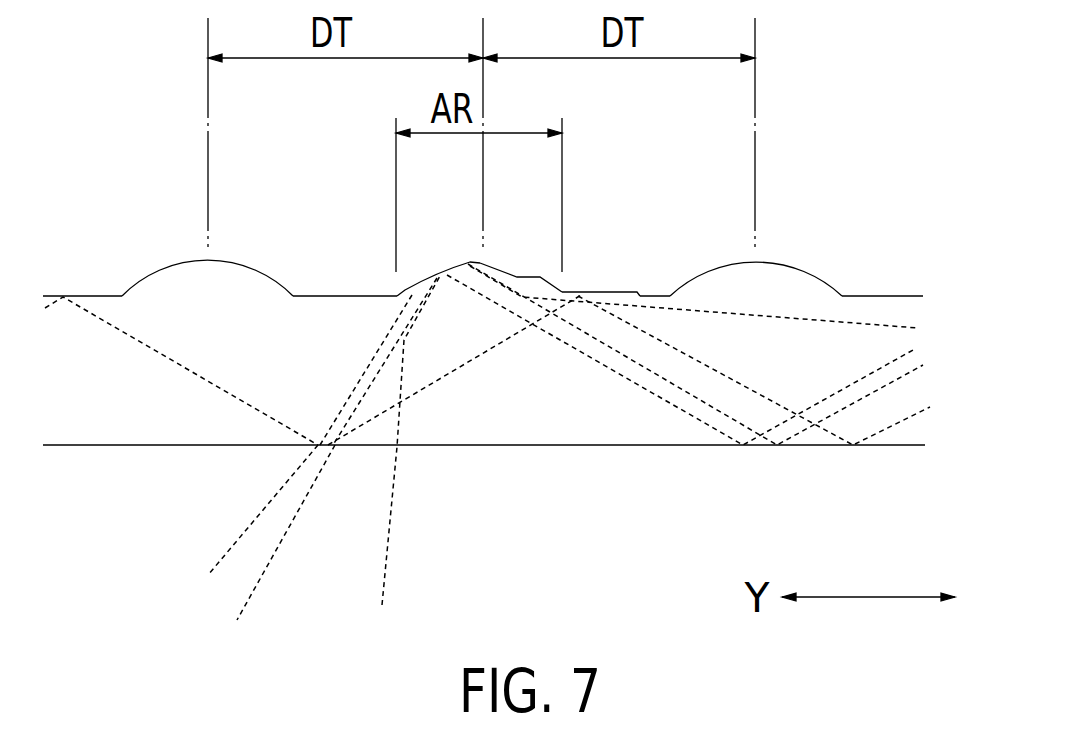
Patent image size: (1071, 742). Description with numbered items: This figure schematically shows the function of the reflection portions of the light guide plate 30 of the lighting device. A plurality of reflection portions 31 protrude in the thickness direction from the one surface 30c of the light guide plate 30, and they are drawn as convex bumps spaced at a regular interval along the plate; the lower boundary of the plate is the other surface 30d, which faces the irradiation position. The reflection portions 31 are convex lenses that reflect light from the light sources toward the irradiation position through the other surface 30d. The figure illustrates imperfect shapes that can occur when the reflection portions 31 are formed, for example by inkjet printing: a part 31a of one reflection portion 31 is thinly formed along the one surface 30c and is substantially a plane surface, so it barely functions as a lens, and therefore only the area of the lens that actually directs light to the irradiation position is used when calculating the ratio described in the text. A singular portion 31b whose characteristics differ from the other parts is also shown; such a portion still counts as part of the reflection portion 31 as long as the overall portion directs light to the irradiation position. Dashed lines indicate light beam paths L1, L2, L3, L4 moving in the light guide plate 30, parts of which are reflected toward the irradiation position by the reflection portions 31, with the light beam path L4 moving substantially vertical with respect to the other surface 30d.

The light guide plate 30 is at (500, 333).
The one surface of the light guide plate 30c is at (345, 296).
The other surface of the light guide plate 30d is at (535, 447).
The reflection portion 31 is at (480, 215).
The part of the reflection portion 31a is at (613, 290).
The singular portion 31b is at (520, 277).
The light beam path L1 is at (700, 420).
The light beam path L2 is at (638, 363).
The light beam path L3 is at (757, 387).
The light beam path L4 is at (857, 322).